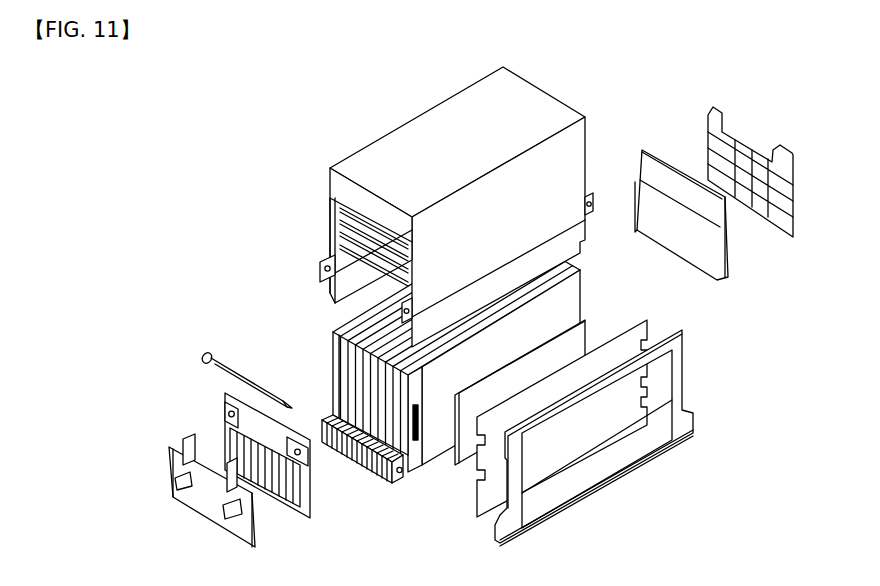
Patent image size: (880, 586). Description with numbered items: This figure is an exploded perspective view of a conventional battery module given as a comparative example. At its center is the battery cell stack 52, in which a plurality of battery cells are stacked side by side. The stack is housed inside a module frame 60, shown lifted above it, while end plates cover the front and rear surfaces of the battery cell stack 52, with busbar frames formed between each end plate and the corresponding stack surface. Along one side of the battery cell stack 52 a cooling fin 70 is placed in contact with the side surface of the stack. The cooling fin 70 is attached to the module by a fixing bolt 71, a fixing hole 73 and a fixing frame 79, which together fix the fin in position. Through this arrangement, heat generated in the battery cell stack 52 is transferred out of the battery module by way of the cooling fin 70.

The battery cell stack 52 is at (330, 342).
The module frame 60 is at (325, 170).
The cooling fin 70 is at (603, 430).
The fixing bolt 71 is at (202, 355).
The fixing hole 73 is at (405, 476).
The fixing frame 79 is at (557, 513).